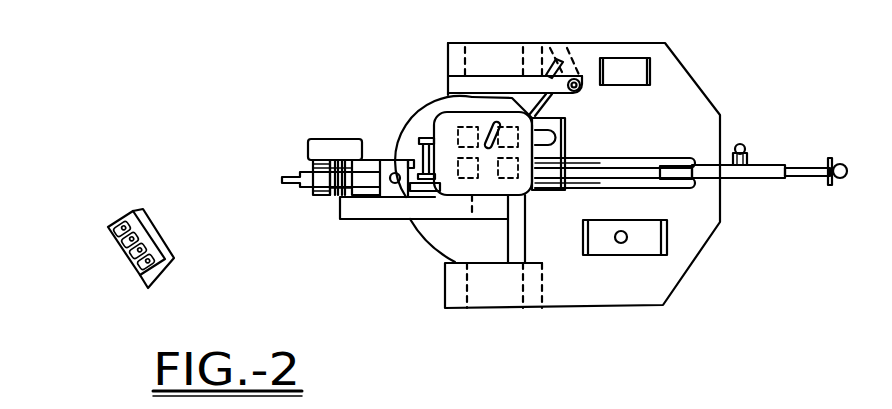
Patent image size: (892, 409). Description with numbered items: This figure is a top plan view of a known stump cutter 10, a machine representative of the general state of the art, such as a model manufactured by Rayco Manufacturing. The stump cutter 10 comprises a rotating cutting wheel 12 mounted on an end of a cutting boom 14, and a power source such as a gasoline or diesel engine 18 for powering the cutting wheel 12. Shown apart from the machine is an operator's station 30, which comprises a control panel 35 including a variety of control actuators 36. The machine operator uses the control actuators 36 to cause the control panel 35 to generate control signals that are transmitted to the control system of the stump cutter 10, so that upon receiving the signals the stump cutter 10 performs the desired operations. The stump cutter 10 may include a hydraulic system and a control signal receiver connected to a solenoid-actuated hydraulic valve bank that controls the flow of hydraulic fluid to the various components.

The stump cutter 10 is at (266, 107).
The rotating cutting wheel 12 is at (281, 178).
The cutting boom 14 is at (306, 186).
The engine 18 is at (447, 123).
The operator's station 30 is at (116, 211).
The control panel 35 is at (116, 238).
The control actuators 36 is at (133, 274).